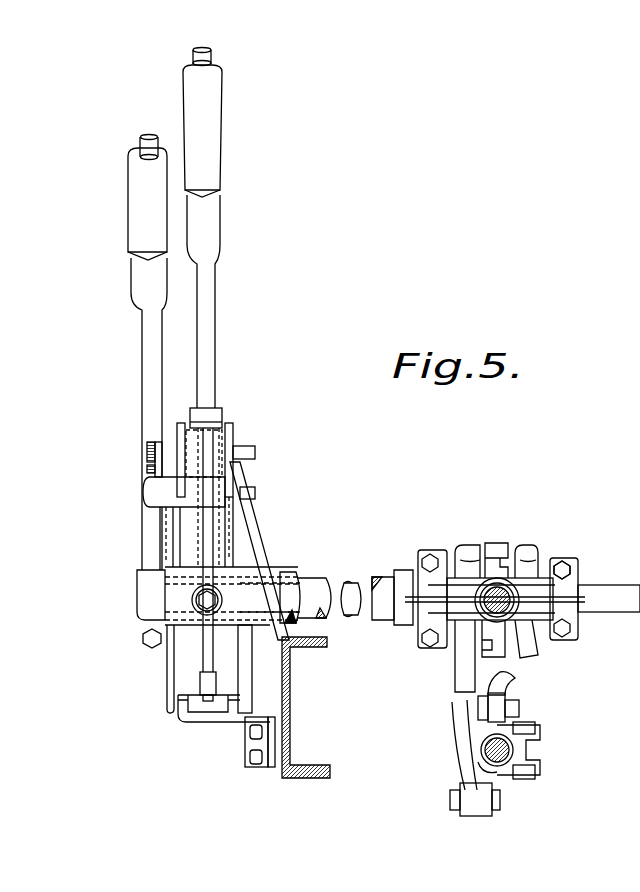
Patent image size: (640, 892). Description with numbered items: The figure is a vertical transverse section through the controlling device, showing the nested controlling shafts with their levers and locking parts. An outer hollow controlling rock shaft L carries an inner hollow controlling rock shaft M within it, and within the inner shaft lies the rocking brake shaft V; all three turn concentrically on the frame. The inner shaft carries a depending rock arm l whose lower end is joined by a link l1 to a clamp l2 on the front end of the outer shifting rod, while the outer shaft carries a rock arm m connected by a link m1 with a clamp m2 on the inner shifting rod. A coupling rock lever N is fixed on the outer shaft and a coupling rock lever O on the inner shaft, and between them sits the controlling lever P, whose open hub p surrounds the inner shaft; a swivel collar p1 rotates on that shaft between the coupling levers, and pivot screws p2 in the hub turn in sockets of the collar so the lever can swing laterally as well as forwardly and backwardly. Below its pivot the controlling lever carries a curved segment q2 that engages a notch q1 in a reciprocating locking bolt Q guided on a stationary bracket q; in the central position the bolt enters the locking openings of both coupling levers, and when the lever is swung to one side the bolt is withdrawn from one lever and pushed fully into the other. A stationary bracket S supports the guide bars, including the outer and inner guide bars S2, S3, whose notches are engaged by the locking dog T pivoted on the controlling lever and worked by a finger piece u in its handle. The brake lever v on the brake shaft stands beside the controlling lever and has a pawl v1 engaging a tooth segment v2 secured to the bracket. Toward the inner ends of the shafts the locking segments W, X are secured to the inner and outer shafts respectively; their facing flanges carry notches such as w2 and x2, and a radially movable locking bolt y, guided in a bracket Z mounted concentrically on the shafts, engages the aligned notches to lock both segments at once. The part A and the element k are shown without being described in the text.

The finger piece u is at (211, 57).
The controlling lever P is at (213, 305).
The brake lever v is at (142, 328).
The locking dog or pawl T is at (213, 418).
The inner guide bar S3 is at (181, 423).
The stationary bracket S is at (210, 440).
The outer guide bar S2 is at (233, 428).
The pawl v1 is at (147, 449).
The tooth segment v2 is at (147, 469).
The swivel collar or sleeve p1 is at (170, 572).
The coupling rock lever O is at (197, 600).
The coupling rock lever N is at (220, 602).
The pivot screws p2 is at (205, 601).
The open hub p is at (196, 630).
The segment q2 is at (200, 683).
The locking bolt or pin Q is at (212, 700).
The notch or recess q1 is at (207, 702).
The stationary bracket q is at (248, 735).
The angle frame A is at (305, 790).
The outer hollow controlling rock shaft L is at (420, 576).
The inner hollow controlling rock shaft M is at (345, 623).
The locking segment W is at (510, 560).
The locking segment X is at (495, 543).
The notch x2 is at (480, 588).
The notch w2 is at (505, 595).
The locking bolt y is at (570, 572).
The rocking brake shaft V is at (609, 598).
The bracket Z is at (540, 605).
The rock arm m is at (455, 685).
The depending rock arm l is at (510, 675).
The link l1 is at (519, 707).
The clamp l2 is at (530, 725).
The lever arm k is at (495, 750).
The link m1 is at (450, 798).
The clamp m2 is at (487, 773).